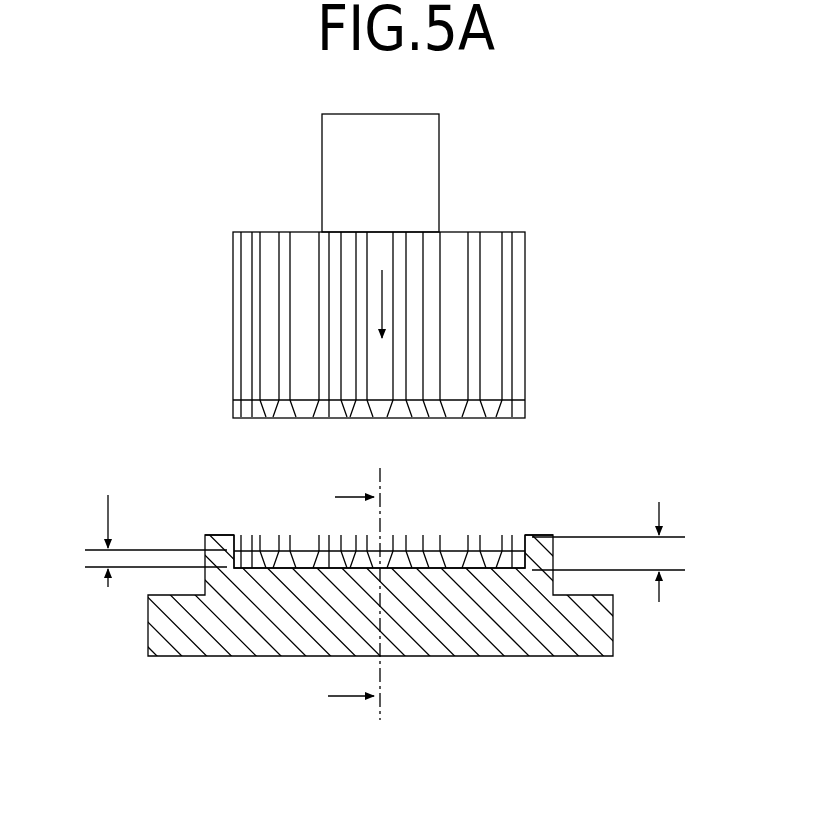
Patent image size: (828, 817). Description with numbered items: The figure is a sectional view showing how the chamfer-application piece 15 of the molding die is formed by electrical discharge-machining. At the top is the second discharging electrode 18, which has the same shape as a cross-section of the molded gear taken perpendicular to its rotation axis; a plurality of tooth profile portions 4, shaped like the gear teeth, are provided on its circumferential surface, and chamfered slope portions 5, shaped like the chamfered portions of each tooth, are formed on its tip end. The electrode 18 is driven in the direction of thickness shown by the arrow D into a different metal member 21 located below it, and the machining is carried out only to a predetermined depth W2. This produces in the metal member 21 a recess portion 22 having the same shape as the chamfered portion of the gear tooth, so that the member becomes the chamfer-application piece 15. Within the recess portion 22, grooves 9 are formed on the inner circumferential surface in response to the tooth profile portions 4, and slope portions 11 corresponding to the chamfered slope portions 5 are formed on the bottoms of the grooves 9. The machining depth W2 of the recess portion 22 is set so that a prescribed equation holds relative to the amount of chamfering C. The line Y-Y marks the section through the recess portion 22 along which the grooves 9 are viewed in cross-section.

The second discharging electrode 18 is at (464, 194).
The tooth profile portions 4 is at (383, 368).
The chamfered slope portions 5 is at (397, 408).
The arrow D is at (383, 298).
The different metal member 21 is at (148, 610).
The chamfer-application piece 15 is at (203, 527).
The recess portion 22 is at (300, 540).
The grooves 9 is at (433, 541).
The slope portions 11 is at (400, 562).
The amount of chamfering C is at (142, 541).
The machining depth W2 is at (628, 552).
The line Y- Y is at (357, 596).